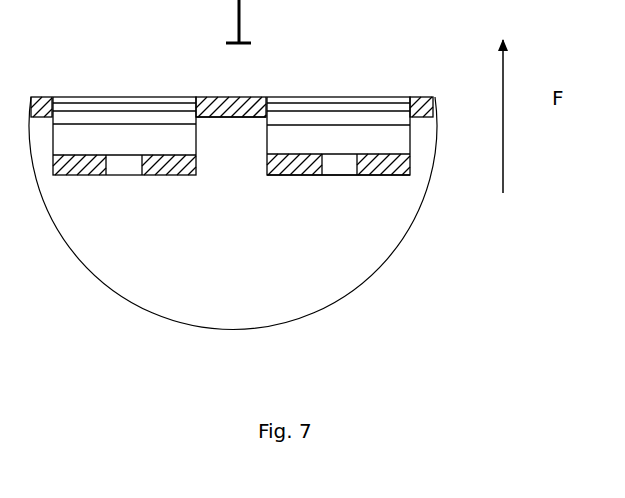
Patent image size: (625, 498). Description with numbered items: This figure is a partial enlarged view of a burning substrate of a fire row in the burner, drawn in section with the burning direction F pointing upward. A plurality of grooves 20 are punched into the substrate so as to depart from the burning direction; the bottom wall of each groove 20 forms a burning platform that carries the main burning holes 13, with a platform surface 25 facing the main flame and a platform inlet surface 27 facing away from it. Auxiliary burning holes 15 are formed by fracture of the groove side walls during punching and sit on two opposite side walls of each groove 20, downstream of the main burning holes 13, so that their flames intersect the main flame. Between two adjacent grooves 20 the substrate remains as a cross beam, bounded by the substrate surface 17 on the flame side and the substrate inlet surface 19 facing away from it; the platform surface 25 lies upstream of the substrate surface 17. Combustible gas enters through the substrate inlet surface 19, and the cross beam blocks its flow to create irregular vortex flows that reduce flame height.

The main burning hole 13 is at (123, 150).
The auxiliary burning hole 15 is at (58, 134).
The substrate surface 17 is at (226, 92).
The substrate inlet surface 19 is at (233, 122).
The groove 20 is at (366, 134).
The platform surface 25 is at (306, 151).
The platform inlet surface 27 is at (300, 178).